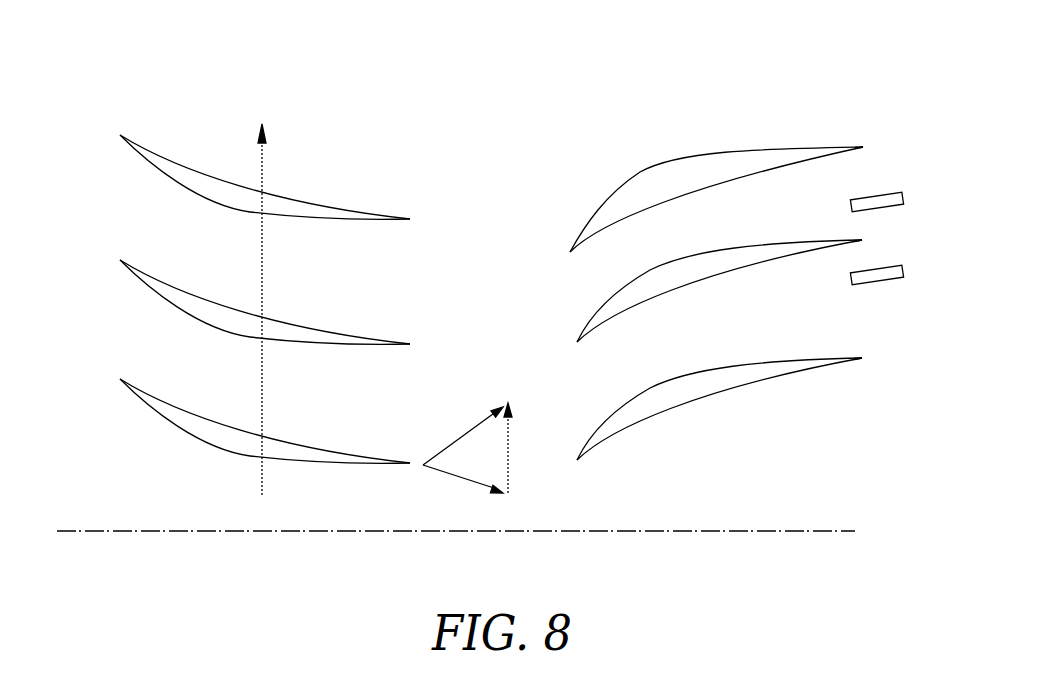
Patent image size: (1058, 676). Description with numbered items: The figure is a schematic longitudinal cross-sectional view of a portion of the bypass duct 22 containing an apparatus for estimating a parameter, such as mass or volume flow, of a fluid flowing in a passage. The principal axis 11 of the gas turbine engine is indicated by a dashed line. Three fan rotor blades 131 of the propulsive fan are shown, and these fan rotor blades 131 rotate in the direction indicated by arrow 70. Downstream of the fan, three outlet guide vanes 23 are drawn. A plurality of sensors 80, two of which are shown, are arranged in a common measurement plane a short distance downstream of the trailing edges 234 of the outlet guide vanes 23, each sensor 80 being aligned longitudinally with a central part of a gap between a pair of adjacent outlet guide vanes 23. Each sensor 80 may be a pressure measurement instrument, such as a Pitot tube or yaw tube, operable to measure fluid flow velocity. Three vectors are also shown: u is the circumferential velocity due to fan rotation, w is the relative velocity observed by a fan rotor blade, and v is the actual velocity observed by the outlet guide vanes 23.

The fan rotor blade 131 is at (120, 135).
The arrow 70 is at (264, 155).
The bypass duct 22 is at (496, 350).
The principal axis 11 is at (89, 530).
The outlet guide vane 23 is at (723, 160).
The trailing edge 234 is at (863, 147).
The sensor 80 is at (904, 197).